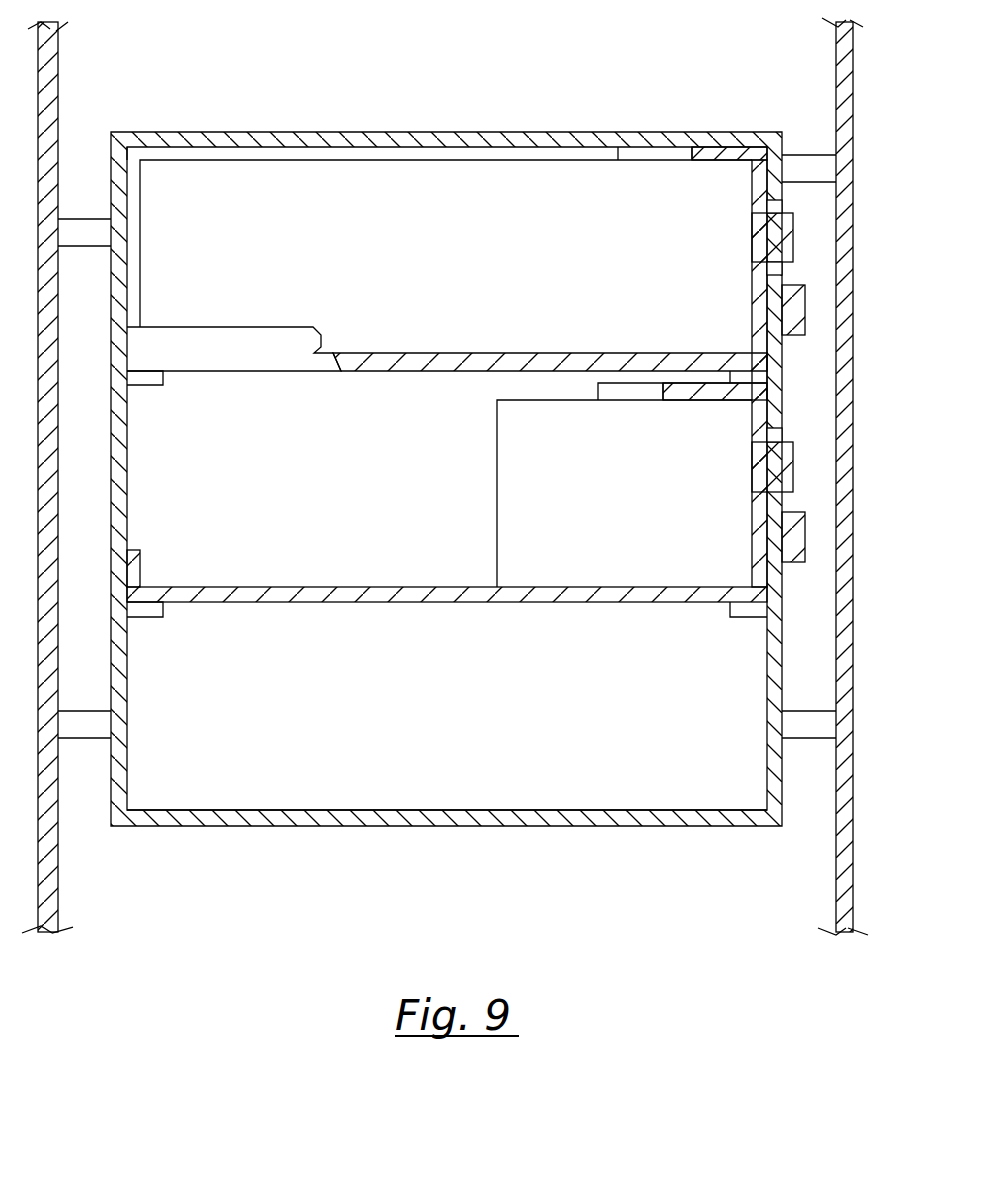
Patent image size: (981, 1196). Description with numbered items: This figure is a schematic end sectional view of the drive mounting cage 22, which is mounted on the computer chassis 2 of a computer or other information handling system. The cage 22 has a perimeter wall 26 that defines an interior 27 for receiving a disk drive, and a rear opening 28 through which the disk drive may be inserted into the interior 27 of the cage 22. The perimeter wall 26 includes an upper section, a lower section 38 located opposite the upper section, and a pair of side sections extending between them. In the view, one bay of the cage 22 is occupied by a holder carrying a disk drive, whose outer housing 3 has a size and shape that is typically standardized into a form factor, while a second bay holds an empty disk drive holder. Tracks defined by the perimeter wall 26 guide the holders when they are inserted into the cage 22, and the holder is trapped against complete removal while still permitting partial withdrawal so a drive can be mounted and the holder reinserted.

The computer chassis 2 is at (843, 441).
The outer housing 3 is at (438, 200).
The drive mounting cage 22 is at (775, 672).
The perimeter wall 26 is at (775, 379).
The interior 27 is at (423, 735).
The rear opening 28 is at (217, 763).
The lower section 38 is at (567, 827).